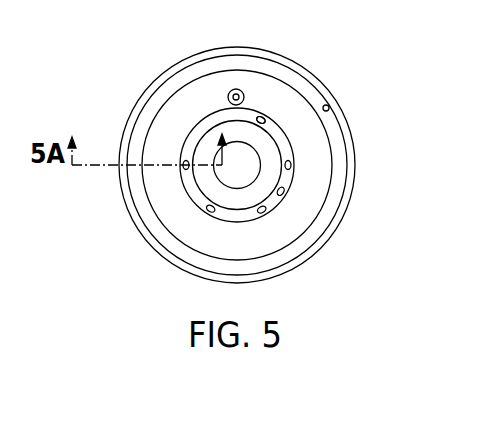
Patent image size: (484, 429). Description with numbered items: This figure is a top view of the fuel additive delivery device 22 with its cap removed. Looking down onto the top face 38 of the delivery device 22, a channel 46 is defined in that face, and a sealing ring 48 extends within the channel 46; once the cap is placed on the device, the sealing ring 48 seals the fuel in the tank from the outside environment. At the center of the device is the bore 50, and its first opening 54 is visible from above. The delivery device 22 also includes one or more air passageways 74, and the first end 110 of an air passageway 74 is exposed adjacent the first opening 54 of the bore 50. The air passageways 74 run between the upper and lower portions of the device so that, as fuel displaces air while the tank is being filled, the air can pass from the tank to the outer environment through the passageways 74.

The fuel additive delivery device 22 is at (330, 50).
The top face 38 is at (158, 202).
The channel 46 is at (329, 105).
The sealing ring 48 is at (337, 158).
The bore 50 is at (256, 223).
The first opening 54 is at (286, 196).
The air passageway 74 is at (296, 150).
The first end 110 is at (259, 116).